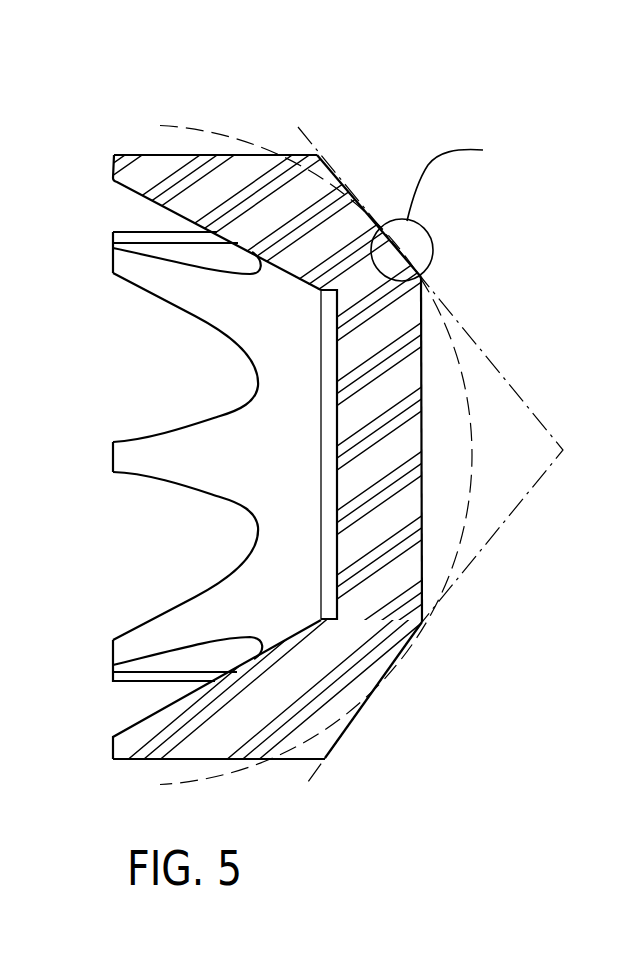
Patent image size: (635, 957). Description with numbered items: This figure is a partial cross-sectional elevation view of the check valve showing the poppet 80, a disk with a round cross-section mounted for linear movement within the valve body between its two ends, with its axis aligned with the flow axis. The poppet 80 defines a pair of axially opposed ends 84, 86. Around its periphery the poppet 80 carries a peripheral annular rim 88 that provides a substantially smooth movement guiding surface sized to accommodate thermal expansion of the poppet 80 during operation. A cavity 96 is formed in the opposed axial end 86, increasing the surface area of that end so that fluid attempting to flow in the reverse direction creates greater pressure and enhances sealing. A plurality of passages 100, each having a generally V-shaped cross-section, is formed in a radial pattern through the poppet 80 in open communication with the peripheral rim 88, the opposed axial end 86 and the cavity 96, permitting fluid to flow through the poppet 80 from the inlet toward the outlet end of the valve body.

The poppet 80 is at (375, 126).
The axial end 84 is at (422, 571).
The opposed axial end 86 is at (112, 177).
The peripheral annular rim 88 is at (142, 155).
The cavity 96 is at (152, 717).
The passages 100 is at (250, 401).